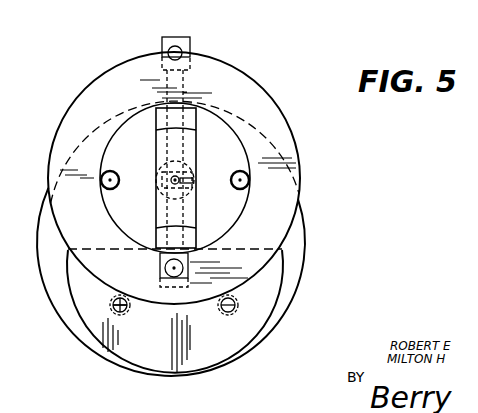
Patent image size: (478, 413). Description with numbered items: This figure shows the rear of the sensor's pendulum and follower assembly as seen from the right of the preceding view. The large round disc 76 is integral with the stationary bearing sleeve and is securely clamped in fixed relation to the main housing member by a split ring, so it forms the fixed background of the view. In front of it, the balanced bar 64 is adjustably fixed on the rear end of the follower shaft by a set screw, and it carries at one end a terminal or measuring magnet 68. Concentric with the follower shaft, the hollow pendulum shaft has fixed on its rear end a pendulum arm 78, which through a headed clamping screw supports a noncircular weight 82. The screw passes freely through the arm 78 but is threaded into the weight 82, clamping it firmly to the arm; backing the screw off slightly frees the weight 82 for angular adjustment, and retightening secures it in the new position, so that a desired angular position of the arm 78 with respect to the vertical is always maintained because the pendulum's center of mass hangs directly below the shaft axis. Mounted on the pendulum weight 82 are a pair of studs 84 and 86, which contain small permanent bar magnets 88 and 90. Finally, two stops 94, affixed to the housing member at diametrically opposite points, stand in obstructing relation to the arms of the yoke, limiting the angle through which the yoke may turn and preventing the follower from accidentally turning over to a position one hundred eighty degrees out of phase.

The balanced bar 64 is at (163, 52).
The measuring magnet 68 is at (188, 48).
The disc 76 is at (288, 131).
The pendulum arm 78 is at (272, 322).
The noncircular weight 82 is at (143, 362).
The stud 84 is at (237, 305).
The stud 86 is at (122, 313).
The permanent bar magnet 88 is at (222, 318).
The permanent bar magnet 90 is at (110, 307).
The stop 94 is at (103, 184).